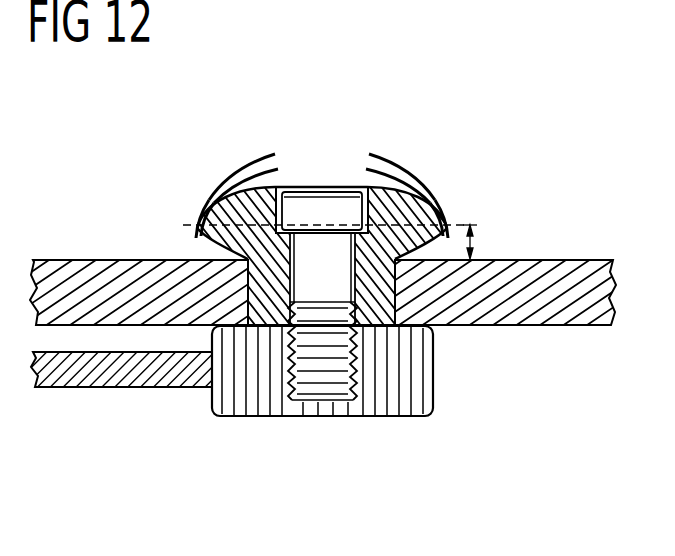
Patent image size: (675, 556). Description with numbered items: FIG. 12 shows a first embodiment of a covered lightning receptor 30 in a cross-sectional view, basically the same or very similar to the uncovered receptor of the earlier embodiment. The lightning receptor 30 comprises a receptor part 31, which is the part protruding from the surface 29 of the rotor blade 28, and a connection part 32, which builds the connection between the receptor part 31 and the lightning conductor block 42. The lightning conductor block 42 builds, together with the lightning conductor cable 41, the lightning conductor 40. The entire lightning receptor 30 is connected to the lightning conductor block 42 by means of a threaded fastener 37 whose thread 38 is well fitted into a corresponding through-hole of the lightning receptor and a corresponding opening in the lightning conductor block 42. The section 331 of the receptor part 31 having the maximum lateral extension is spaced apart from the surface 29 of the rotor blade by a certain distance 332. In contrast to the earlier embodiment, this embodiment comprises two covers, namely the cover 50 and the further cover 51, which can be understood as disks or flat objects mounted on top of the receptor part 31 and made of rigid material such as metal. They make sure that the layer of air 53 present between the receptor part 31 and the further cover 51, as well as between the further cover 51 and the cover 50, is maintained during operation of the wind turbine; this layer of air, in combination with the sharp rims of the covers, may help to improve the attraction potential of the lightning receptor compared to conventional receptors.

The plate 28 is at (48, 275).
The surface 29 is at (93, 258).
The lightning receptor 30 is at (397, 82).
The receptor part 31 is at (200, 230).
The connection part 32 is at (383, 283).
The threaded fastener 37 is at (318, 208).
The threaded bolt 38 is at (357, 375).
The lightning conductor 40 is at (176, 450).
The lightning conductor cable 41 is at (105, 377).
The lightning conductor block 42 is at (415, 372).
The cover 50 is at (248, 157).
The further cover 51 is at (208, 185).
The gap between spring arms 53 is at (340, 173).
The section 331 is at (190, 212).
The distance 332 is at (475, 240).